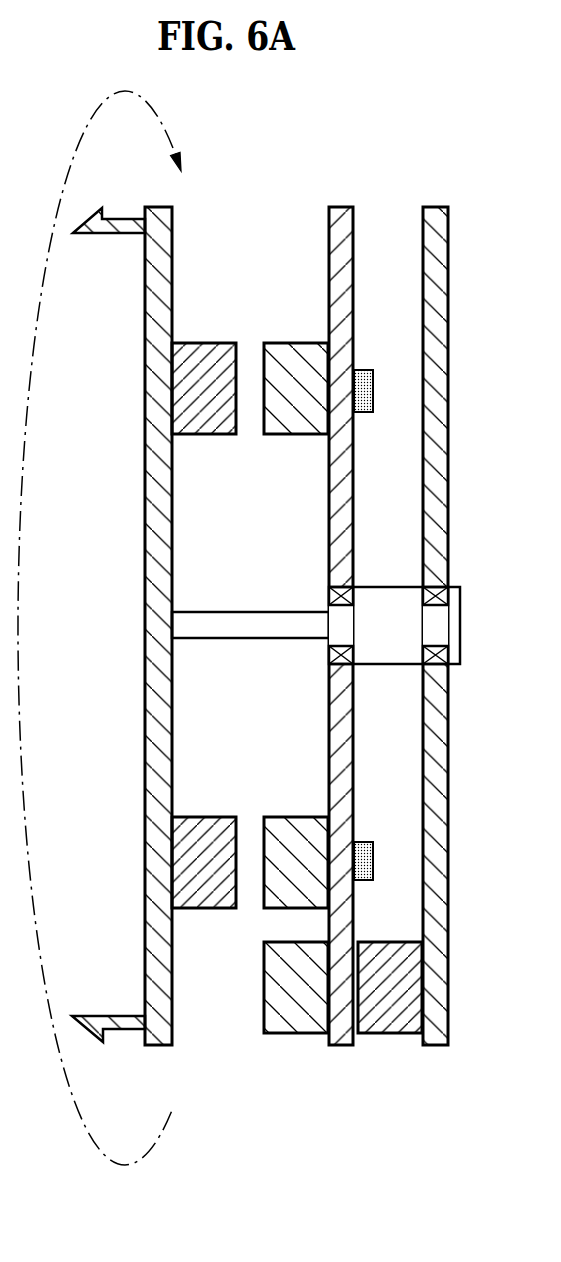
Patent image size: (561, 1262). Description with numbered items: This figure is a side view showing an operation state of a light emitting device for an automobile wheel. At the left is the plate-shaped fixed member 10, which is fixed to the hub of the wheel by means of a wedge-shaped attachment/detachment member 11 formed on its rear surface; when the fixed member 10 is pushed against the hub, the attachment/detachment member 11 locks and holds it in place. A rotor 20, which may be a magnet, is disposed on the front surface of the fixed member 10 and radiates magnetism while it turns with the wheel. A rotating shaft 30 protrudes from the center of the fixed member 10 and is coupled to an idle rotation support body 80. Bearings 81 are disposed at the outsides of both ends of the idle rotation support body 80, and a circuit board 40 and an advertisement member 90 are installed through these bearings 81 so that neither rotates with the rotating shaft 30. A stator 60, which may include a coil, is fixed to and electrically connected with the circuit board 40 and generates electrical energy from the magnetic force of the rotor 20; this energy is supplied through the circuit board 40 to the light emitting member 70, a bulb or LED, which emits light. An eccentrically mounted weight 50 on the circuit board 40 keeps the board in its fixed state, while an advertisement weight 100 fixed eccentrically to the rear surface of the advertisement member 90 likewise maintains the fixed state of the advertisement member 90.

The fixed member 10 is at (148, 548).
The attachment/detachment member 11 is at (105, 233).
The rotor 20 is at (206, 343).
The rotating shaft 30 is at (230, 618).
The circuit board 40 is at (330, 488).
The weight 50 is at (295, 1025).
The stator 60 is at (286, 343).
The light emitting member 70 is at (373, 390).
The idle rotation support body 80 is at (388, 593).
The bearing 81 is at (330, 587).
The advertisement member 90 is at (446, 270).
The advertisement weight 100 is at (390, 1025).